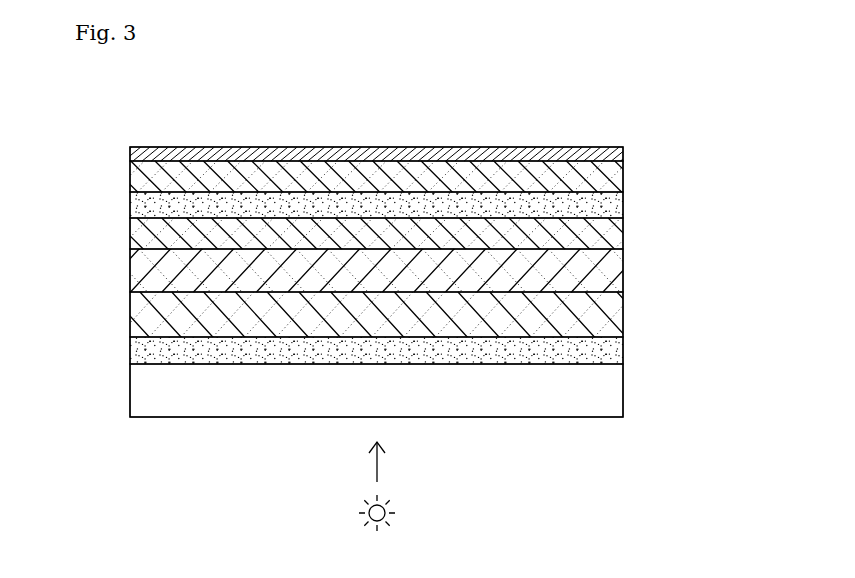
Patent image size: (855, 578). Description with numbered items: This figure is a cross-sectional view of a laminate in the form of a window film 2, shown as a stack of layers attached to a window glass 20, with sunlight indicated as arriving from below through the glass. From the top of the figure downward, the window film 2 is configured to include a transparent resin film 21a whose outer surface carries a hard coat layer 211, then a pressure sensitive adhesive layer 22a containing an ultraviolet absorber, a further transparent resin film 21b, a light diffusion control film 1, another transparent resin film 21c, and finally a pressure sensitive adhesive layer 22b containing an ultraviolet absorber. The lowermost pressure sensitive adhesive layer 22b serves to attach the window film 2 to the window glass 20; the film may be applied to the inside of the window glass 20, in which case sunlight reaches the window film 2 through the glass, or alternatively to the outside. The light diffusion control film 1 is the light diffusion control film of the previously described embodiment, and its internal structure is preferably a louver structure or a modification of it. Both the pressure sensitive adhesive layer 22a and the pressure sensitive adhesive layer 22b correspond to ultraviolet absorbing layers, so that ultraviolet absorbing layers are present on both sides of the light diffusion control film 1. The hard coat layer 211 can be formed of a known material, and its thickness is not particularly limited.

The window film 2 is at (630, 130).
The hard coat layer 211 is at (617, 157).
The transparent resin film 21a is at (610, 177).
The pressure sensitive adhesive layer containing an ultraviolet absorber 22a is at (615, 203).
The transparent resin film 21b is at (618, 228).
The light diffusion control film 1 is at (610, 265).
The transparent resin film 21c is at (618, 315).
The pressure sensitive adhesive layer containing an ultraviolet absorber 22b is at (617, 352).
The window glass 20 is at (625, 390).